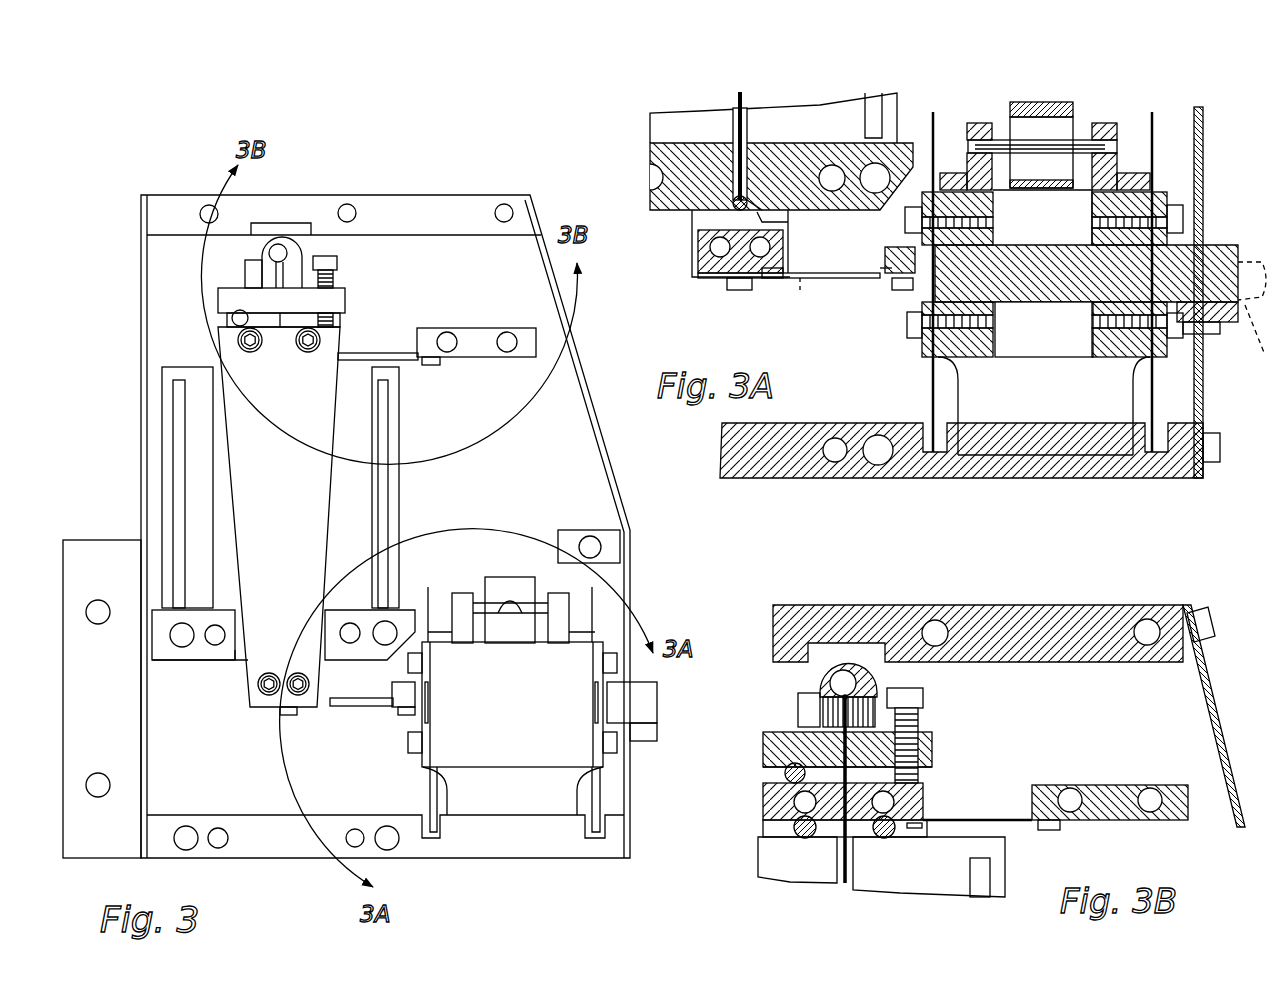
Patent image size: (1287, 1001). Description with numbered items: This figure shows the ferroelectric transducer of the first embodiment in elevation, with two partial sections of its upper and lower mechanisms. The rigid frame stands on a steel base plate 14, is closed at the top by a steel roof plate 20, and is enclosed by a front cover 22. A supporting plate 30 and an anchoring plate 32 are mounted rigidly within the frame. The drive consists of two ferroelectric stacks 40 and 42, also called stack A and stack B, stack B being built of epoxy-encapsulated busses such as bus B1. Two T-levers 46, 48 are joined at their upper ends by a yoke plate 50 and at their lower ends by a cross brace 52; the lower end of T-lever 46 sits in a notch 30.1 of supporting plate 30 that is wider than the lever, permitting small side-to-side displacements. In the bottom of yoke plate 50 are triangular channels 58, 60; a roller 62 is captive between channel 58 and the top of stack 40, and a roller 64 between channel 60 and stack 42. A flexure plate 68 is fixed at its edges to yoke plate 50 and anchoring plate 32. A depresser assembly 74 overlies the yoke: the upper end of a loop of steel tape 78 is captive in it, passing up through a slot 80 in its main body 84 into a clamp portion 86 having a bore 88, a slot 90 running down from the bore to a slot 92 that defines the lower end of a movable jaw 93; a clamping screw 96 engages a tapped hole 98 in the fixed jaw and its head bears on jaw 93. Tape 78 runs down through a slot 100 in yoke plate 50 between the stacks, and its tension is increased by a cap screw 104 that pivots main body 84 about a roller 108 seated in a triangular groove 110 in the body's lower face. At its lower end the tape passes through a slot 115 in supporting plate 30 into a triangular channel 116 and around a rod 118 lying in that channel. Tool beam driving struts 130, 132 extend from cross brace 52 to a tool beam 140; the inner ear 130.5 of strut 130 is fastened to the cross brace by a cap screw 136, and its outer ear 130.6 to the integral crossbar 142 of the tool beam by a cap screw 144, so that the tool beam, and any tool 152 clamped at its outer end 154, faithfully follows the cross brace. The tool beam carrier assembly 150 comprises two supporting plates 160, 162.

In FIG. 3A, the base plate 14 is at (852, 468).
In FIG. 3B, the roof plate 20 is at (1000, 613).
In FIG. 3B, the front cover 22 is at (1206, 676).
In FIG. 3, the supporting plate 30 is at (205, 656).
In FIG. 3A, the supporting plate 30 is at (663, 157).
In FIG. 3, the notch 30.1 is at (236, 655).
In FIG. 3B, the anchoring plate 32 is at (1090, 785).
In FIG. 3A, the ferroelectric stack 40 is at (692, 125).
In FIG. 3B, the ferroelectric stack 40 is at (760, 875).
In FIG. 3A, the ferroelectric stack 42 is at (827, 103).
In FIG. 3B, the ferroelectric stack 42 is at (913, 882).
In FIG. 3, the T-lever 46 is at (290, 509).
In FIG. 3B, the T-lever 48 is at (765, 835).
In FIG. 3B, the yoke plate 50 is at (765, 803).
In FIG. 3A, the cross brace 52 is at (698, 262).
In FIG. 3B, the channel 58 is at (794, 828).
In FIG. 3B, the channel 60 is at (892, 803).
In FIG. 3B, the roller 62 is at (815, 836).
In FIG. 3B, the roller 64 is at (883, 838).
In FIG. 3B, the flexure plate 68 is at (1000, 820).
In FIG. 3B, the depresser assembly 74 is at (752, 648).
In FIG. 3A, the tape loop 78 is at (747, 100).
In FIG. 3B, the tape loop 78 is at (850, 775).
In FIG. 3B, the slot 80 is at (880, 752).
In FIG. 3B, the main body 84 is at (765, 745).
In FIG. 3B, the clamp portion 86 is at (854, 670).
In FIG. 3B, the bore 88 is at (843, 666).
In FIG. 3B, the slot 90 is at (825, 690).
In FIG. 3B, the slot 92 is at (800, 738).
In FIG. 3B, the movable jaw 93 is at (900, 745).
In FIG. 3B, the clamping screw 96 is at (825, 712).
In FIG. 3B, the tapped hole 98 is at (882, 710).
In FIG. 3B, the slot 100 is at (838, 812).
In FIG. 3B, the cap screw 104 is at (918, 715).
In FIG. 3B, the roller 108 is at (790, 773).
In FIG. 3B, the groove 110 is at (765, 760).
In FIG. 3A, the slot 115 is at (737, 173).
In FIG. 3A, the channel 116 is at (788, 220).
In FIG. 3A, the rod 118 is at (735, 208).
In FIG. 3A, the tool beam driving strut 130 is at (797, 282).
In FIG. 3A, the inner ear 130.5 is at (770, 279).
In FIG. 3A, the outer ear 130.6 is at (886, 275).
In FIG. 3A, the tool beam driving strut 132 is at (800, 278).
In FIG. 3A, the cap screw 136 is at (740, 282).
In FIG. 3A, the tool beam 140 is at (1043, 304).
In FIG. 3A, the crossbar 142 is at (890, 250).
In FIG. 3A, the cap screw 144 is at (897, 292).
In FIG. 3, the tool beam carrier assembly 150 is at (510, 826).
In FIG. 3A, the tool beam carrier assembly 150 is at (1028, 402).
In FIG. 3A, the tool 152 is at (1265, 354).
In FIG. 3A, the outer end 154 is at (1208, 245).
In FIG. 3, the supporting plate 160 is at (522, 732).
In FIG. 3A, the supporting plate 162 is at (1105, 399).
In FIG. 3B, the ferroelectric stack A is at (787, 877).
In FIG. 3B, the ferroelectric stack B is at (947, 887).
In FIG. 3B, the epoxy-encapsulated bus B1 is at (980, 884).